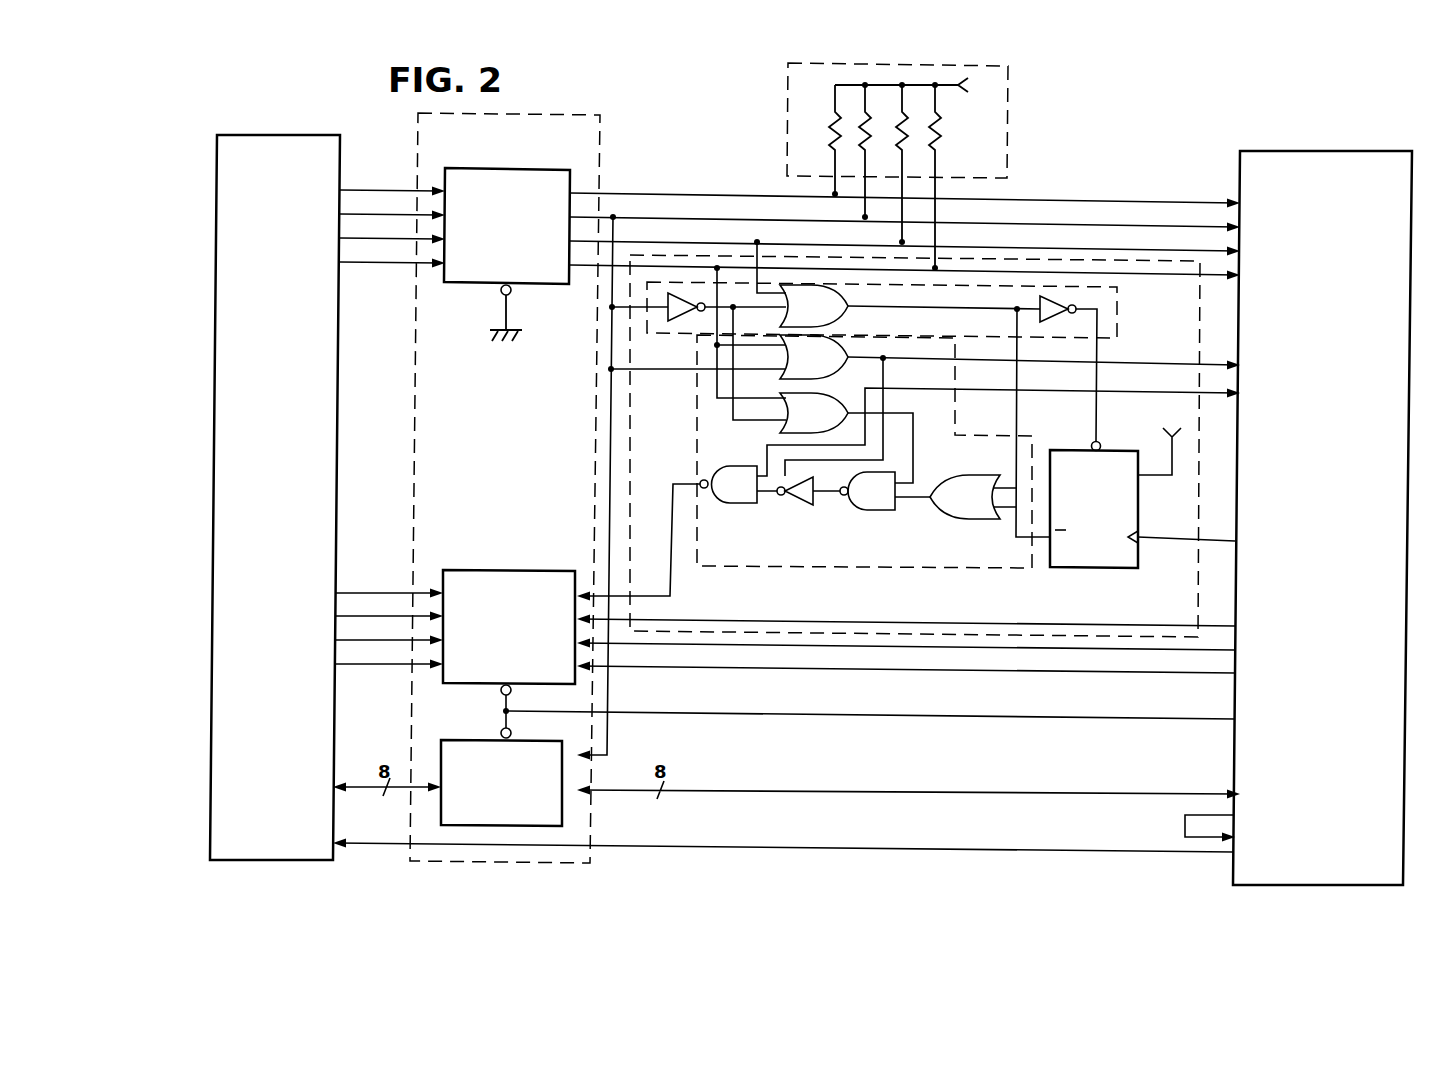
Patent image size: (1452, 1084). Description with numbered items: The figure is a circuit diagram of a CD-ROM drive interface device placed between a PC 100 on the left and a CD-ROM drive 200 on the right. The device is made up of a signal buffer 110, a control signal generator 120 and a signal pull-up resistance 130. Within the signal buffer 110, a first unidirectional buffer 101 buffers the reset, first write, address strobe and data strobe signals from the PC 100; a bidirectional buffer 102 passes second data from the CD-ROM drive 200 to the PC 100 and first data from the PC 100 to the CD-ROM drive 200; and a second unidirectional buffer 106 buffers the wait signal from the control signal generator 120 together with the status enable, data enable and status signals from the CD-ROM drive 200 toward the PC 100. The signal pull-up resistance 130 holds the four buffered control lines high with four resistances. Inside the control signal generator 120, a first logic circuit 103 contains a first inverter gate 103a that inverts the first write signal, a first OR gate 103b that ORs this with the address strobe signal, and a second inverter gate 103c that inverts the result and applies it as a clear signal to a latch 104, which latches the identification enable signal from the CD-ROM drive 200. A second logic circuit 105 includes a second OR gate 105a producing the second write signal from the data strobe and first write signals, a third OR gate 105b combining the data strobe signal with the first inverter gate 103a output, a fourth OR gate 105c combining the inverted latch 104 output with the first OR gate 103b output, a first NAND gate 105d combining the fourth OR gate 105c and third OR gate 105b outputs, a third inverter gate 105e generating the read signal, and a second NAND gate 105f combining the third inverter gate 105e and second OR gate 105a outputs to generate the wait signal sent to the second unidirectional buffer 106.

The PC 100 is at (284, 148).
The first unidirectional buffer 101 is at (504, 177).
The bidirectional buffer 102 is at (553, 812).
The logic circuit 103 is at (1118, 310).
The first inverter gate 103a is at (681, 322).
The first OR gate 103b is at (847, 311).
The second inverter gate 103c is at (1057, 323).
The latch 104 is at (1090, 568).
The logic circuit 105 is at (918, 568).
The second OR gate 105a is at (846, 352).
The third OR gate 105b is at (777, 405).
The fourth OR gate 105c is at (960, 518).
The first NAND gate 105d is at (874, 511).
The third inverter gate 105e is at (800, 505).
The second NAND gate 105f is at (733, 504).
The second unidirectional buffer 106 is at (499, 575).
The signal buffer 110 is at (601, 151).
The control signal generator 120 is at (862, 598).
The signal pull-up resistance 130 is at (1008, 123).
The CD-ROM drive 200 is at (1312, 158).